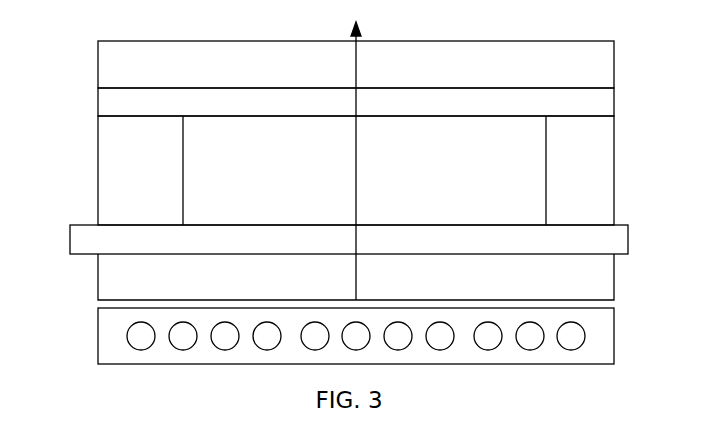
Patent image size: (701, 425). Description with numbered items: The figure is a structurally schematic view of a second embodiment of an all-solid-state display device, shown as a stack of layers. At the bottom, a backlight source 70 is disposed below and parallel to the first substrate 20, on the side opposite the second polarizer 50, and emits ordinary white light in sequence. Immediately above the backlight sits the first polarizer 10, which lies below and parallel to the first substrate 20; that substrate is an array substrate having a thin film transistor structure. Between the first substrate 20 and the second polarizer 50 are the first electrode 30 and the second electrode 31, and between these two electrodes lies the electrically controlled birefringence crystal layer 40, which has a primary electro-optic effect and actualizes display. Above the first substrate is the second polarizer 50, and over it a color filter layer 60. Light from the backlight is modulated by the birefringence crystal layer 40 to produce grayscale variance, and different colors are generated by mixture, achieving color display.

The first polarizer 10 is at (614, 278).
The first substrate 20 is at (628, 240).
The first electrode 30 is at (573, 215).
The second electrode 31 is at (115, 142).
The electrically controlled birefringence crystal layer 40 is at (503, 190).
The second polarizer 50 is at (614, 100).
The color filter layer 60 is at (614, 62).
The backlight source 70 is at (614, 334).